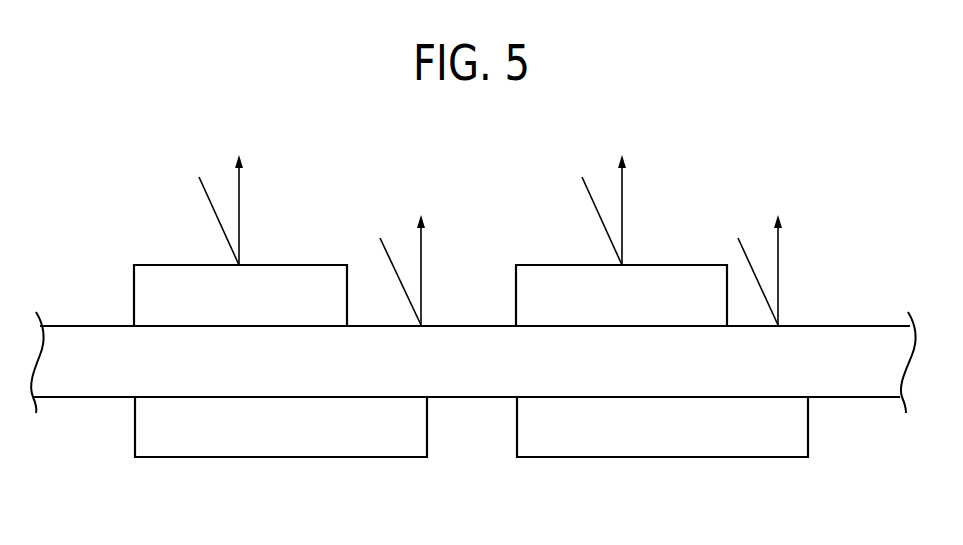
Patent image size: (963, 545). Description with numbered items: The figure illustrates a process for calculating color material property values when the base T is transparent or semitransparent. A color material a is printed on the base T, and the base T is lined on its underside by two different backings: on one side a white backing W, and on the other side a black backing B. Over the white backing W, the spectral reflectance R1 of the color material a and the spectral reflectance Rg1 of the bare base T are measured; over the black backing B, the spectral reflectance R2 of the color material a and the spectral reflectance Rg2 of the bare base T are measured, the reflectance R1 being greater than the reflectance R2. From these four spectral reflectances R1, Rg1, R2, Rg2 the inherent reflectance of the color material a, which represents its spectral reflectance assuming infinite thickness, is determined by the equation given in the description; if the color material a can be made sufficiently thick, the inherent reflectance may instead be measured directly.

The base T is at (473, 362).
The color material a is at (430, 295).
The white backing W is at (407, 458).
The black backing B is at (785, 458).
The spectral reflectance R1 is at (242, 210).
The spectral reflectance R2 is at (626, 210).
The spectral reflectance Rg1 is at (425, 270).
The spectral reflectance Rg2 is at (782, 270).